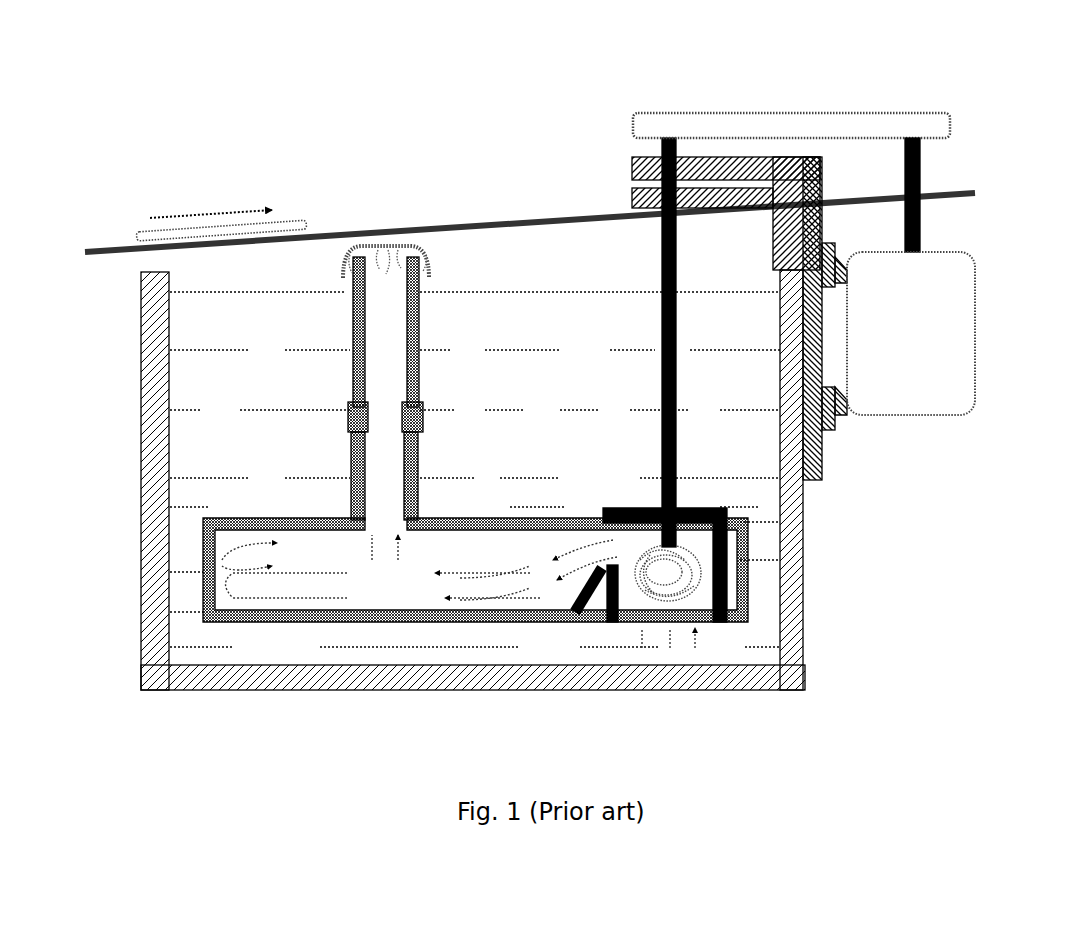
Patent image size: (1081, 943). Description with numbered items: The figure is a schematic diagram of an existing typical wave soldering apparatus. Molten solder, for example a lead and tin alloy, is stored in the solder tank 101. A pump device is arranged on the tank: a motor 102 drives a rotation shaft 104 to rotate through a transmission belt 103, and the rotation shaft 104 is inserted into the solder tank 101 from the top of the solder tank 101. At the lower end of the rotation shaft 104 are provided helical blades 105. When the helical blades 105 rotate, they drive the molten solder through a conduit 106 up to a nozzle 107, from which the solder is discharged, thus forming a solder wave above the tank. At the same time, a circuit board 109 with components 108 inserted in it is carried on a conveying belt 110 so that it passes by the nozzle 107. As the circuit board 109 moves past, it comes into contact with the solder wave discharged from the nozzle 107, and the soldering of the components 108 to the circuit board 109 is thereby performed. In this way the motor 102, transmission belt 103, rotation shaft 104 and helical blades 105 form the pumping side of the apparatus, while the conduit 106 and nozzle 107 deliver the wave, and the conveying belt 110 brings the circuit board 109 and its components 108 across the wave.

The solder tank 101 is at (141, 647).
The motor 102 is at (960, 372).
The transmission belt 103 is at (785, 125).
The rotation shaft 104 is at (655, 322).
The helical blades 105 is at (735, 588).
The conduit 106 is at (350, 468).
The nozzle 107 is at (385, 230).
The components 108 is at (150, 233).
The circuit board 109 is at (238, 225).
The conveying belt 110 is at (460, 222).